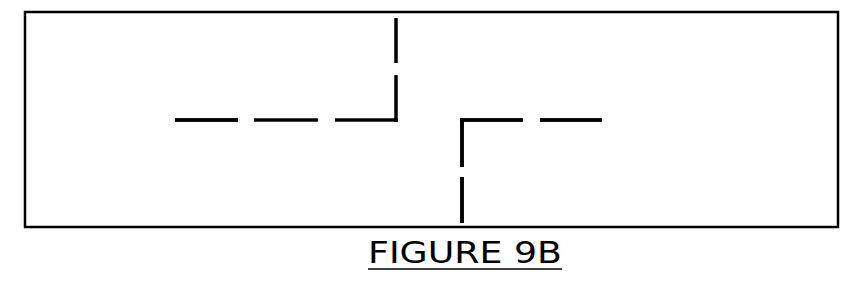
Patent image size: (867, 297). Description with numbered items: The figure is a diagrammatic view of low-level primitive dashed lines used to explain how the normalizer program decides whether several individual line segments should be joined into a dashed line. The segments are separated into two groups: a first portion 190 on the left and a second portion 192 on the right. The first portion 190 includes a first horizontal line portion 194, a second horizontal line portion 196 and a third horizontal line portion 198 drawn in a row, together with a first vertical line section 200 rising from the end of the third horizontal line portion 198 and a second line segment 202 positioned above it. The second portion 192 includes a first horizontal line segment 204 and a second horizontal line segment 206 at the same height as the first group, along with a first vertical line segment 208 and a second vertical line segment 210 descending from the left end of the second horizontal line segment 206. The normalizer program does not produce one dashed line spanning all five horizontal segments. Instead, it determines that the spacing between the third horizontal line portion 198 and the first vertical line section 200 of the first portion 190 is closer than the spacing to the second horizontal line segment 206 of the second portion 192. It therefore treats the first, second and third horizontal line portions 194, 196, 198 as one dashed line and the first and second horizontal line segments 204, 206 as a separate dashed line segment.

The first portion 190 is at (242, 66).
The second portion 192 is at (598, 181).
The first horizontal line portion 194 is at (195, 122).
The second horizontal line portion 196 is at (272, 122).
The third horizontal line portion 198 is at (348, 122).
The first vertical line section 200 is at (394, 90).
The second line segment 202 is at (394, 37).
The first horizontal line segment 204 is at (588, 118).
The second horizontal line segment 206 is at (510, 118).
The first vertical line segment 208 is at (464, 145).
The second vertical line segment 210 is at (464, 197).